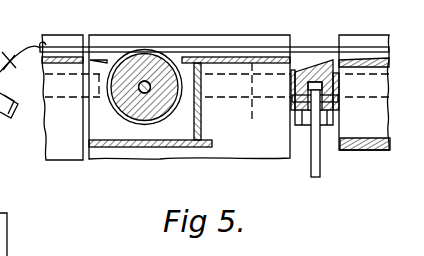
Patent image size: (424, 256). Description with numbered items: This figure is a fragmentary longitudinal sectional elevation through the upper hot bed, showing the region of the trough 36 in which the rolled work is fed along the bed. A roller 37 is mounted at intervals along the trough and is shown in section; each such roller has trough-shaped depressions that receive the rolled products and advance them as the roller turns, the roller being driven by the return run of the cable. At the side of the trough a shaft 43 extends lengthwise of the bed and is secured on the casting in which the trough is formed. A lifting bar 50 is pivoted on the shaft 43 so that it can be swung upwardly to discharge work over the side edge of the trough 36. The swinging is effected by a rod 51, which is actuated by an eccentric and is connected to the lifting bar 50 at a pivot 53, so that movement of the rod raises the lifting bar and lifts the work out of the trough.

The trough 36 is at (259, 18).
The roller 37 is at (135, 115).
The shaft 43 is at (189, 97).
The lifting bar 50 is at (304, 127).
The rod 51 is at (320, 164).
The pivot 53 is at (336, 105).